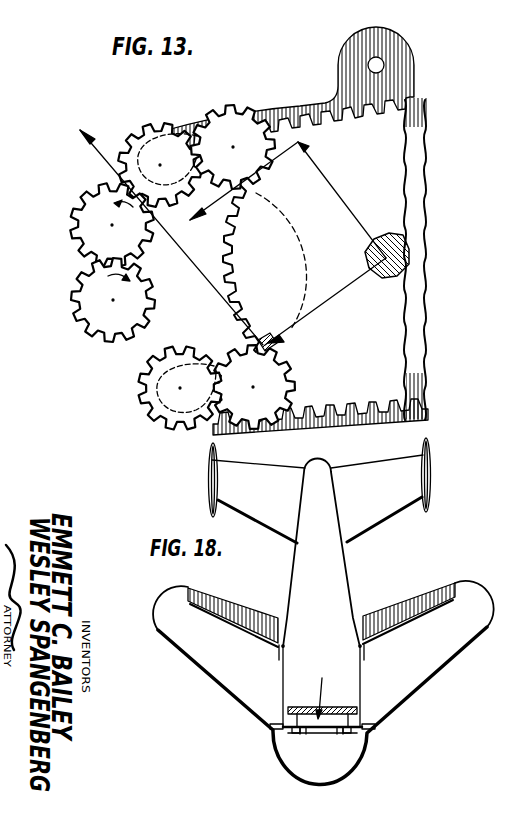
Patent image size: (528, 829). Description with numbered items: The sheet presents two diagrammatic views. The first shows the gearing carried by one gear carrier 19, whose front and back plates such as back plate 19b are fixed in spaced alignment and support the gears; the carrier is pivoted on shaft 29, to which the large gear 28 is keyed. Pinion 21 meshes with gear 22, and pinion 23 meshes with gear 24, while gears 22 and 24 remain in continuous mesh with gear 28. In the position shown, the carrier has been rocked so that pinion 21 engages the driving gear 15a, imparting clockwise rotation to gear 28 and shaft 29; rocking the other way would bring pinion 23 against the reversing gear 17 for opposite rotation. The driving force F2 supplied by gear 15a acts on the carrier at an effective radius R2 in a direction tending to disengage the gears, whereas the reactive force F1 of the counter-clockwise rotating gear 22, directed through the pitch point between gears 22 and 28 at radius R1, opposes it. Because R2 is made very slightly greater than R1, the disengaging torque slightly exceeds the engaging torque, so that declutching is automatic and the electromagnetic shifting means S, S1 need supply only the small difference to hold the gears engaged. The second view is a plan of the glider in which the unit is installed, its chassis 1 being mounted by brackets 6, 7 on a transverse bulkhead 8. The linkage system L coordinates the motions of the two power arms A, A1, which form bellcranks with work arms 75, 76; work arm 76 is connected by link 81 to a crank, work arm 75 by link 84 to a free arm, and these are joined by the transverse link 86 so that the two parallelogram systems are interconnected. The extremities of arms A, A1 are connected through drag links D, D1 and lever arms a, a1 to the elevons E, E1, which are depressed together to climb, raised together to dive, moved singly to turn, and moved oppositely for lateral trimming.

In FIG. 13, the driving gear 15a is at (74, 212).
In FIG. 13, the reversing gear 17 is at (84, 276).
In FIG. 13, the gear carrier 19 is at (287, 108).
In FIG. 13, the back plate 19b is at (337, 90).
In FIG. 13, the pinion 21 is at (155, 122).
In FIG. 13, the gear 22 is at (241, 110).
In FIG. 13, the pinion 23 is at (165, 412).
In FIG. 13, the gear 24 is at (340, 438).
In FIG. 13, the large gear 28 is at (382, 168).
In FIG. 13, the shaft 29 is at (400, 250).
In FIG. 13, the reactive force F1 is at (244, 183).
In FIG. 13, the driving force F2 is at (107, 161).
In FIG. 13, the effective radius R1 is at (315, 163).
In FIG. 13, the effective radius R2 is at (325, 301).
In FIG. 18, the elevon E is at (425, 593).
In FIG. 18, the elevon E1 is at (216, 597).
In FIG. 18, the drag link D is at (361, 668).
In FIG. 18, the drag link D1 is at (282, 668).
In FIG. 18, the lever arm a is at (359, 646).
In FIG. 18, the lever arm a1 is at (284, 646).
In FIG. 18, the chassis 1 is at (322, 689).
In FIG. 18, the mounting bracket 6 is at (297, 708).
In FIG. 18, the mounting bracket 7 is at (347, 716).
In FIG. 18, the transverse bulkhead 8 is at (332, 707).
In FIG. 18, the power arm A is at (364, 724).
In FIG. 18, the power arm A1 is at (281, 725).
In FIG. 18, the linkage system L is at (272, 727).
In FIG. 18, the work arm 75 is at (364, 729).
In FIG. 18, the work arm 76 is at (288, 729).
In FIG. 18, the link 81 is at (298, 733).
In FIG. 18, the link 84 is at (350, 734).
In FIG. 18, the link 86 is at (323, 734).
In FIG. 18, the electromagnetic gear shifting means S is at (343, 734).
In FIG. 18, the electromagnetic gear shifting means S1 is at (305, 734).